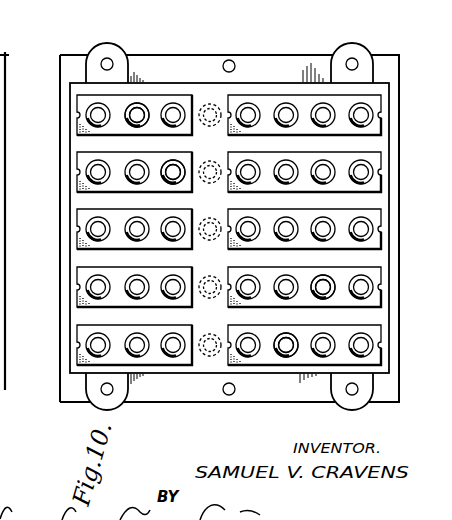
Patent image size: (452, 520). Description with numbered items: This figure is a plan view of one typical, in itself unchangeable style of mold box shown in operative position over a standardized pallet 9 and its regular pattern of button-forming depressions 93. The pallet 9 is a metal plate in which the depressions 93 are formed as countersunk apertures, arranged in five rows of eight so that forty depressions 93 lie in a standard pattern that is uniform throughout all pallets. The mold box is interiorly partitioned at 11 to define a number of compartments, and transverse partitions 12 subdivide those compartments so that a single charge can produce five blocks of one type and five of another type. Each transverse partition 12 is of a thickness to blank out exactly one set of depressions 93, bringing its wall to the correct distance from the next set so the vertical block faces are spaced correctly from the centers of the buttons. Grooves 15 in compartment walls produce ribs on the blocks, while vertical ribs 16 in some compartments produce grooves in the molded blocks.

The pallet 9 is at (301, 68).
The partitions 11 is at (87, 258).
The transverse partitions 12 is at (248, 113).
The grooves 15 is at (4, 296).
The vertical ribs 16 is at (80, 120).
The depressions 93 is at (170, 163).